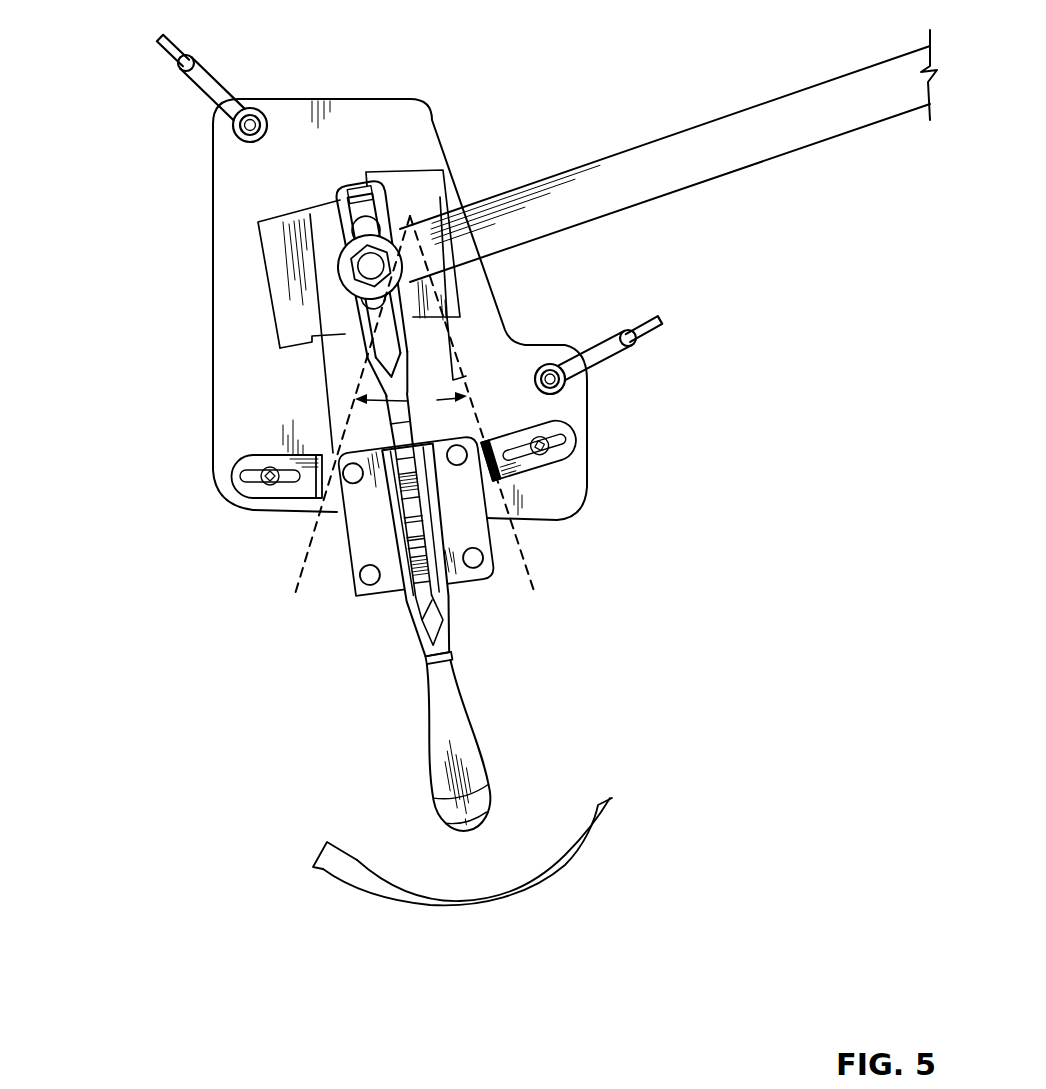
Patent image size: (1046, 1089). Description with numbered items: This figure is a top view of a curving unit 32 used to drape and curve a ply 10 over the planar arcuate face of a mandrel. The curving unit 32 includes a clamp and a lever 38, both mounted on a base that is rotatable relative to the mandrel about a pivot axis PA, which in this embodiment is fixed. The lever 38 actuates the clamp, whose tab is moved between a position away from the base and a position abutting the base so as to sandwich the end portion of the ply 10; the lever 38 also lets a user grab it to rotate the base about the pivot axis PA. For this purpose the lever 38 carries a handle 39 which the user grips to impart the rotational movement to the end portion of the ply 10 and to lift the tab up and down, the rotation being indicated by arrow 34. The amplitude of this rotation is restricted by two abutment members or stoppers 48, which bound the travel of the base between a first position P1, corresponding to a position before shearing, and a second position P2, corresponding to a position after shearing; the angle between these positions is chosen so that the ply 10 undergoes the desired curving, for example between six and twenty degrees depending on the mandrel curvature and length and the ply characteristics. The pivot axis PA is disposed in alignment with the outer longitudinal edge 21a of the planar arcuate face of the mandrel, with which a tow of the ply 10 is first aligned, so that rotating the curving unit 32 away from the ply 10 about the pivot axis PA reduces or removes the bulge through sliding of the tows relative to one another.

The ply 10 is at (570, 197).
The outer longitudinal edge 21a is at (748, 164).
The curving unit 32 is at (243, 192).
The pivot direction arrow 34 is at (442, 902).
The lever 38 is at (395, 568).
The handle 39 is at (437, 778).
The stoppers 48 is at (232, 477).
The pivot axis PA is at (378, 197).
The first position P1 is at (497, 410).
The second position P2 is at (329, 410).